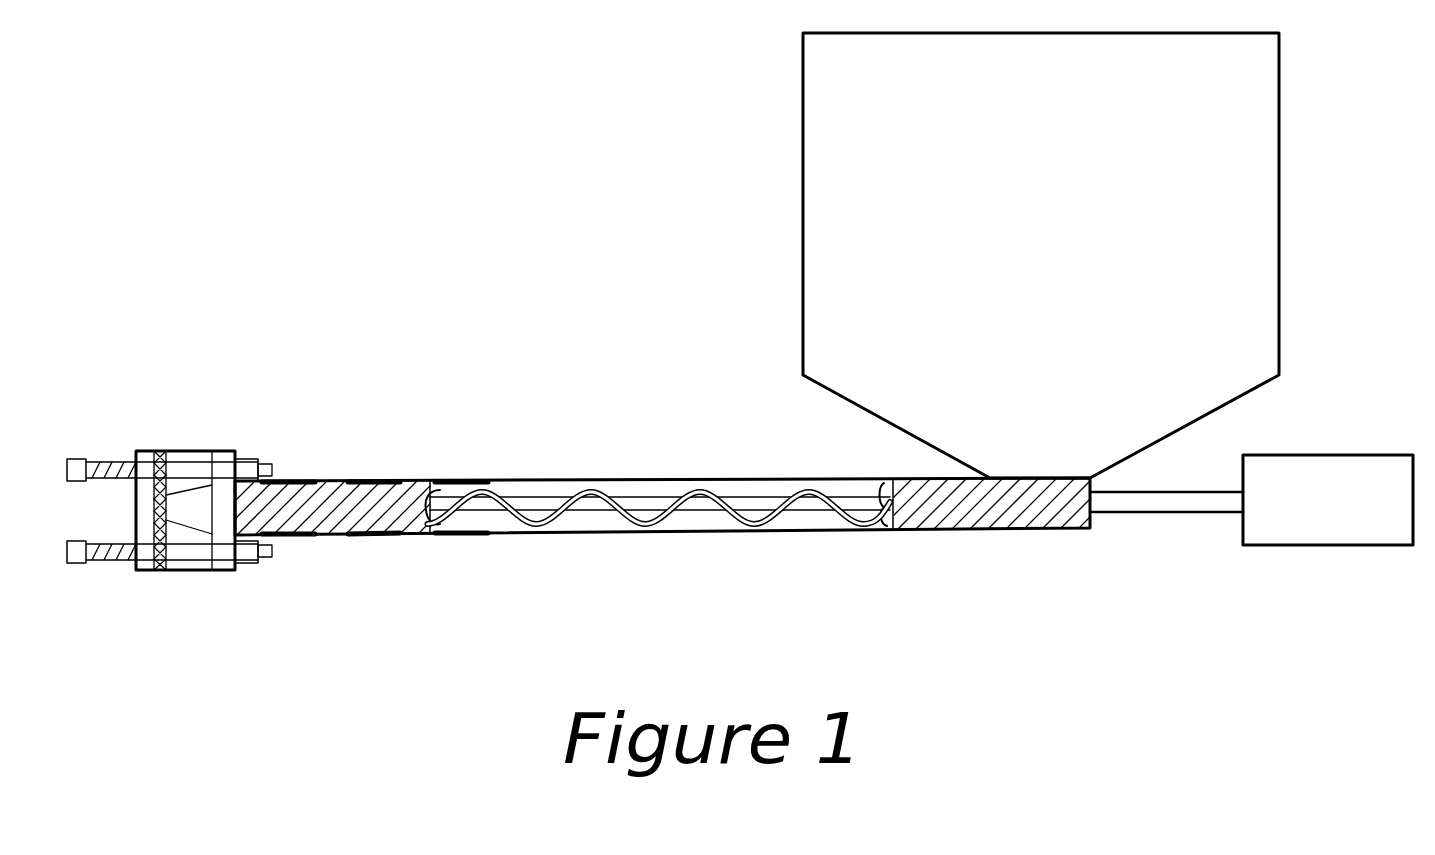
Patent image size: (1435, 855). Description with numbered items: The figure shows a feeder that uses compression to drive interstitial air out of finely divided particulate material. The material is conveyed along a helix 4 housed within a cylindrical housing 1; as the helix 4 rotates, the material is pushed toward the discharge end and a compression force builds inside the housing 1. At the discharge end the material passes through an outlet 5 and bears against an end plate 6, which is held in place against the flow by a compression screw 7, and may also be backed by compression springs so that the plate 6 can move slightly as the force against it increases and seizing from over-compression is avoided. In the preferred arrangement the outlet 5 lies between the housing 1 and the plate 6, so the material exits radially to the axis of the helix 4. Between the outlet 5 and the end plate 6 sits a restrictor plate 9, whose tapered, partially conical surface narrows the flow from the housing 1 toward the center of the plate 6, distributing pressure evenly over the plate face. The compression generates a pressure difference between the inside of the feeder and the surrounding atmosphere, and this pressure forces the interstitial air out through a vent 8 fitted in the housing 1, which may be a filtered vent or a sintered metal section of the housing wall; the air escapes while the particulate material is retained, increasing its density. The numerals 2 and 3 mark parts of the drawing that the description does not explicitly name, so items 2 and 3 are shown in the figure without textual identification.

The cylindrical housing 1 is at (977, 528).
The feed opening 2 is at (1035, 477).
The hopper 3 is at (1041, 255).
The helix 4 is at (660, 532).
The outlet 5 is at (223, 569).
The end plate 6 is at (147, 569).
The compression screw 7 is at (77, 540).
The vent 8 is at (390, 480).
The restrictor plate 9 is at (197, 452).